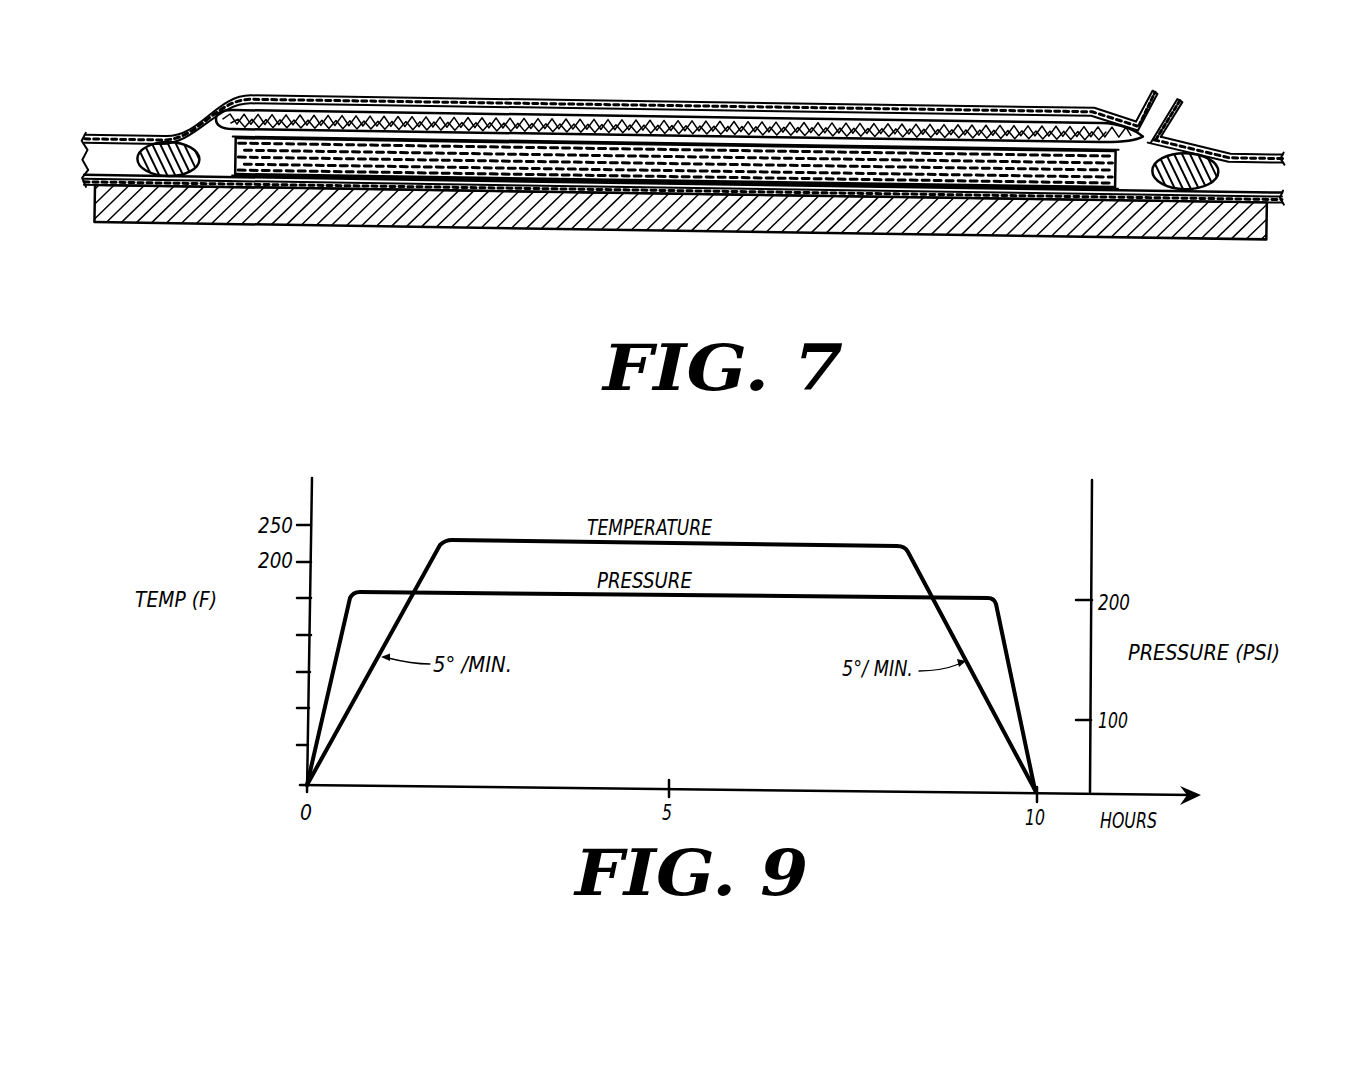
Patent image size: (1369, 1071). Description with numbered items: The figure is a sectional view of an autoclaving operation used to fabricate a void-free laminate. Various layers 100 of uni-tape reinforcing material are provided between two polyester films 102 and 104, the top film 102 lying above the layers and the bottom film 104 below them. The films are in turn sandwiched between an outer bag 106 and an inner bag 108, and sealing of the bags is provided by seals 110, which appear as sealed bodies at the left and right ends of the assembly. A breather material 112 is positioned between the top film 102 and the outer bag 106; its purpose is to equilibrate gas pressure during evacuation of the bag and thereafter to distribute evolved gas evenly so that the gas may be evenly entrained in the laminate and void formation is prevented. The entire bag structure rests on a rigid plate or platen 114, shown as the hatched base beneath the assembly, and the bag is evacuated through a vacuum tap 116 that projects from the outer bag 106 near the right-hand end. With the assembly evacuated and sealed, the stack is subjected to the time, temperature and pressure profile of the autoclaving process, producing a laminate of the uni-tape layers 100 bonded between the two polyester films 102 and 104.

The layers of uni-tape material 100 is at (441, 172).
The polyester film 102 is at (680, 144).
The polyester film 104 is at (965, 181).
The outer bag 106 is at (344, 96).
The inner bag 108 is at (780, 196).
The seals 110 is at (168, 150).
The breather material 112 is at (397, 106).
The rigid plate or platen 114 is at (657, 206).
The vacuum tap 116 is at (1176, 84).